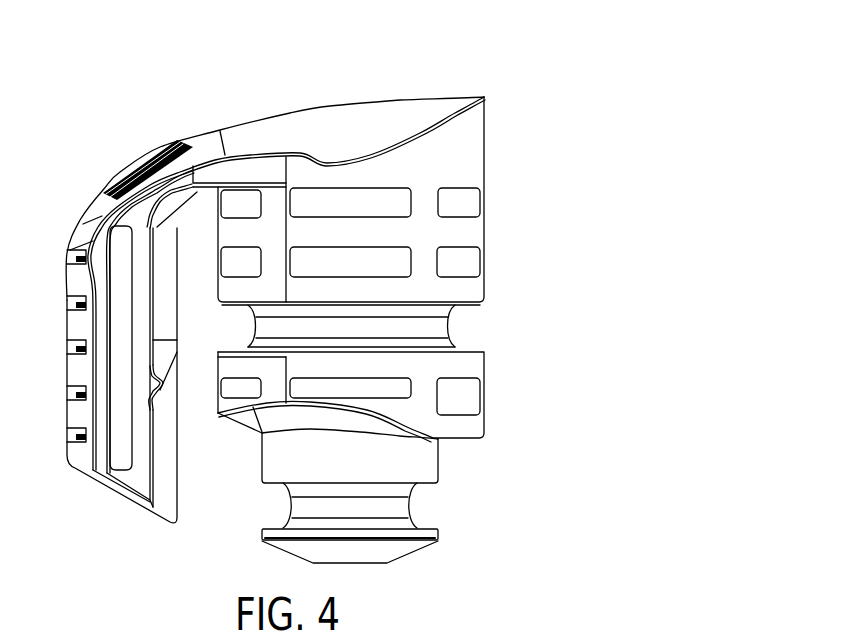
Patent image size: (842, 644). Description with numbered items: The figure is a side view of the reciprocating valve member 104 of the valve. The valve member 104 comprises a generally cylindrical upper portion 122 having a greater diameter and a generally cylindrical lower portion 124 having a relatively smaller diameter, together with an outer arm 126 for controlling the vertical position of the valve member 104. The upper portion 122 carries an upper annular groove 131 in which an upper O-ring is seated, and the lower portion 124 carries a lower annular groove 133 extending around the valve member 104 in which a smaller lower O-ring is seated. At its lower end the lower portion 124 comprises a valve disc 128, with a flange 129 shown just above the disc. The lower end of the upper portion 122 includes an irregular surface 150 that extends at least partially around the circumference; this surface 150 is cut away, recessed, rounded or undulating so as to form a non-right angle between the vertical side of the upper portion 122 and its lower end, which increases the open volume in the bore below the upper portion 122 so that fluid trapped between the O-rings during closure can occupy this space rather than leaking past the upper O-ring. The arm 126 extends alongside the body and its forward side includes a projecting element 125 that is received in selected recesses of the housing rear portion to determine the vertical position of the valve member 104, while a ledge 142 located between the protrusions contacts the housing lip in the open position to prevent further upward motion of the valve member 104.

The valve member 104 is at (450, 66).
The upper portion 122 is at (470, 152).
The lower portion 124 is at (267, 467).
The projecting element 125 is at (176, 362).
The outer arm 126 is at (102, 214).
The valve disc 128 is at (397, 545).
The flange 129 is at (430, 537).
The upper annular groove 131 is at (433, 330).
The lower annular groove 133 is at (403, 510).
The ledge 142 is at (170, 345).
The irregular surface 150 is at (280, 420).